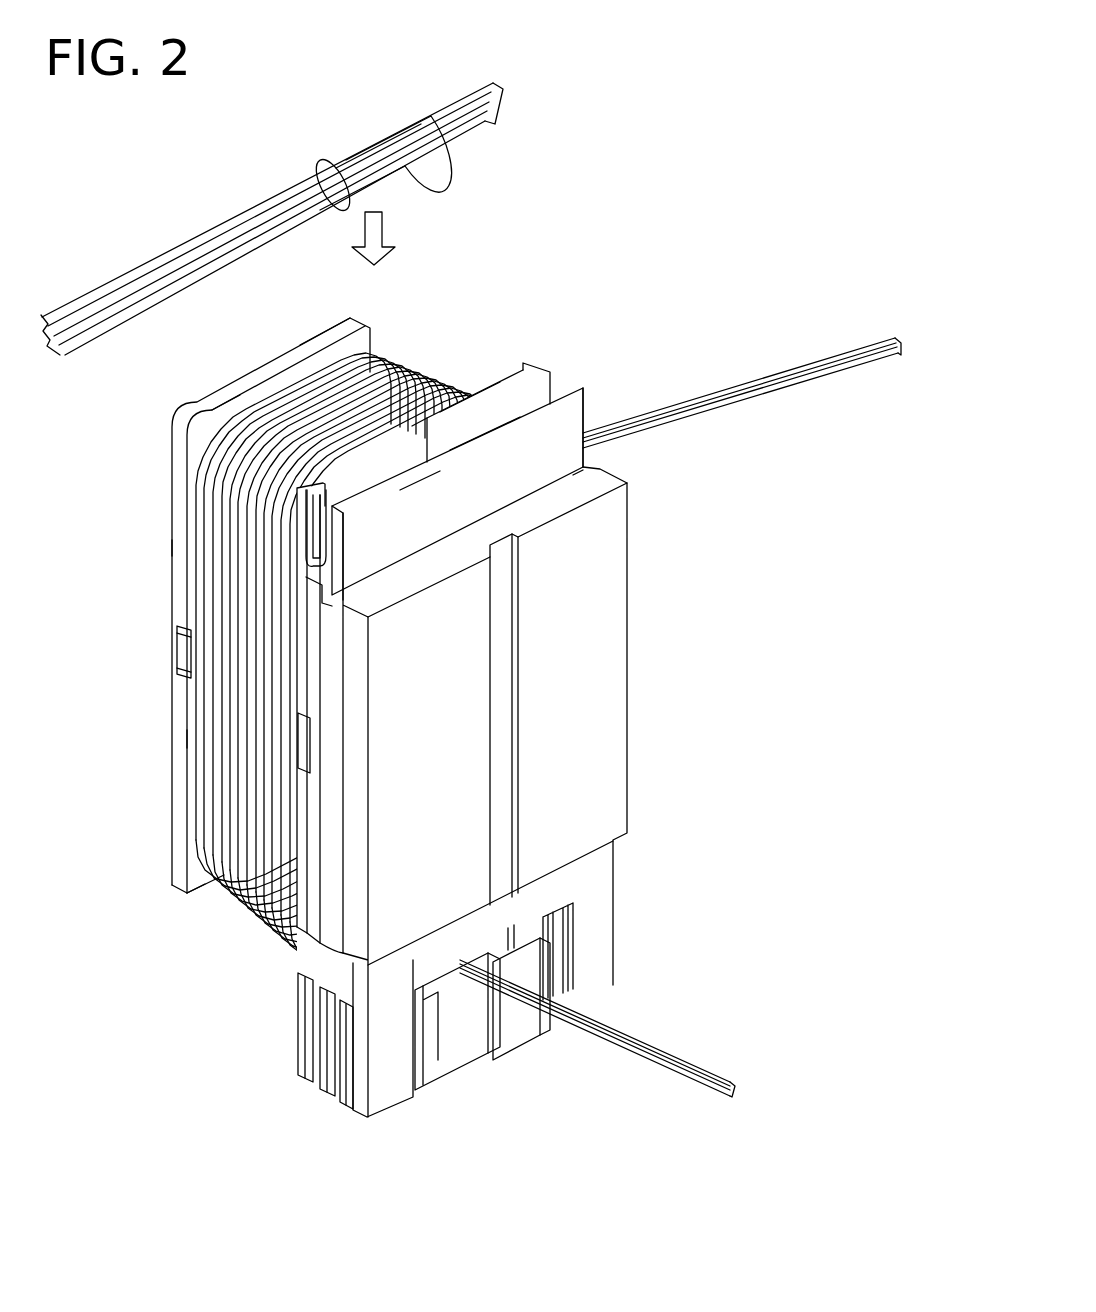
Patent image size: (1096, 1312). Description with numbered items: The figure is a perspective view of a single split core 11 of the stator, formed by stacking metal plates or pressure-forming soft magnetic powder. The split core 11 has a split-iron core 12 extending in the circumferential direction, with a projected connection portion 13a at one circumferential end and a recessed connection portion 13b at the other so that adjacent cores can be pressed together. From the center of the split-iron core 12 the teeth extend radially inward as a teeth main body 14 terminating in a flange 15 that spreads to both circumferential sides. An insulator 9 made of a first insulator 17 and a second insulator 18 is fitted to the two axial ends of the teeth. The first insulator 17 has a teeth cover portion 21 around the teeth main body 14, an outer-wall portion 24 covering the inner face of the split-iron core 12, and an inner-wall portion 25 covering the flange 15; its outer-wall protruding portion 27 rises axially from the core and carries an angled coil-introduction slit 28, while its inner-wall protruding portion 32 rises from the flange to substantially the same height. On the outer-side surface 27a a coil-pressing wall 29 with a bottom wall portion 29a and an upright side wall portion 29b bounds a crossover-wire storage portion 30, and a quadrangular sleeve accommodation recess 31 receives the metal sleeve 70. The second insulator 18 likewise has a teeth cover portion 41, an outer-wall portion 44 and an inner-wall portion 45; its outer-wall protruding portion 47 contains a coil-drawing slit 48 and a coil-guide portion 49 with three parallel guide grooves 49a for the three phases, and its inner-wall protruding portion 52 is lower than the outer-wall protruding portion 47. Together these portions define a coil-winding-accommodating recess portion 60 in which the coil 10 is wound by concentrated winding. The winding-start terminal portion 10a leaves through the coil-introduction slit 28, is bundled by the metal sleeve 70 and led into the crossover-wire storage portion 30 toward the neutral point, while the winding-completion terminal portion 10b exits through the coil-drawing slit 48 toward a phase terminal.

The insulator 9 is at (433, 694).
The coil 10 is at (299, 638).
The terminal portion 10a is at (217, 230).
The terminal portion 10b is at (685, 1050).
The split core 11 is at (598, 300).
The split-iron core 12 is at (630, 660).
The connection portion 13a is at (332, 915).
The connection portion 13b is at (592, 473).
The teeth main body 14 is at (272, 845).
The flange 15 is at (172, 780).
The first insulator 17 is at (527, 357).
The second insulator 18 is at (633, 937).
The teeth cover portion 21 is at (183, 617).
The outer-wall portion 24 is at (298, 655).
The inner-wall portion 25 is at (177, 547).
The outer-wall protruding portion 27 is at (330, 472).
The outer-side surface 27a is at (470, 455).
The coil-introduction slit 28 is at (482, 418).
The coil-pressing wall 29 is at (583, 385).
The bottom wall portion 29a is at (312, 585).
The side wall portion 29b is at (475, 505).
The crossover-wire storage portion 30 is at (327, 565).
The sleeve accommodation recess 31 is at (447, 447).
The inner-wall protruding portion 32 is at (228, 382).
The teeth cover portion 41 is at (250, 770).
The outer-wall portion 44 is at (309, 874).
The inner-wall portion 45 is at (177, 739).
The outer-wall protruding portion 47 is at (297, 1040).
The coil-drawing slit 48 is at (492, 1013).
The coil-guide portion 49 is at (388, 1093).
The guide grooves 49a is at (350, 1088).
The inner-wall protruding portion 52 is at (205, 880).
The coil-winding-accommodating recess portion 60 is at (355, 347).
The metal sleeve 70 is at (373, 140).